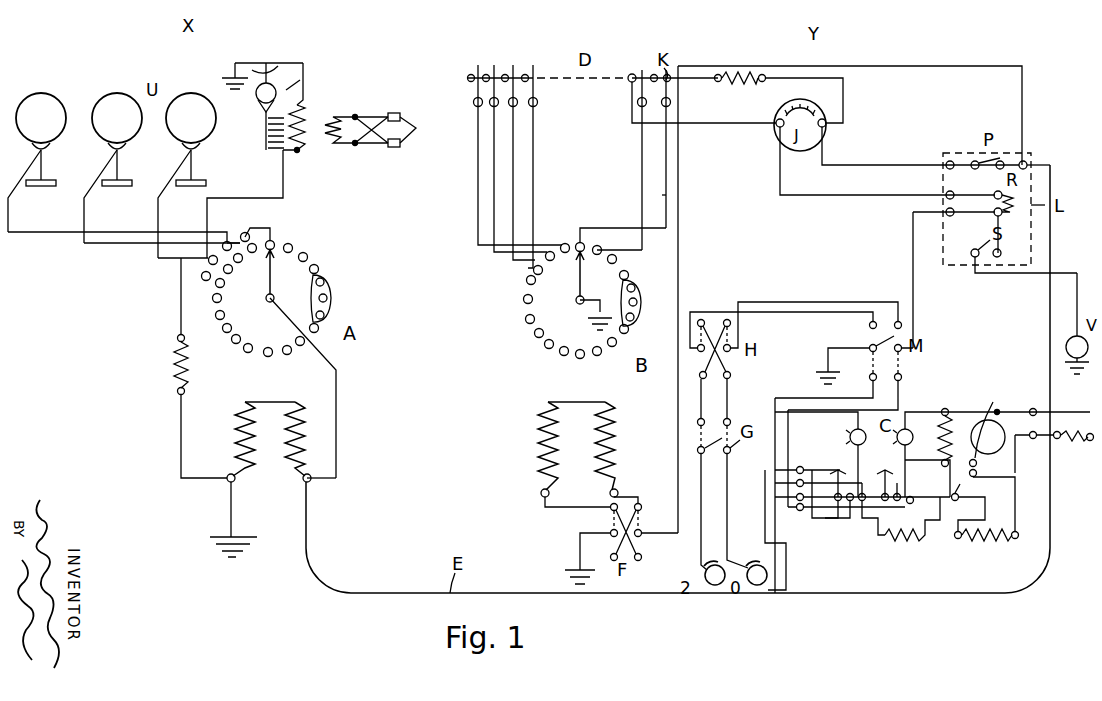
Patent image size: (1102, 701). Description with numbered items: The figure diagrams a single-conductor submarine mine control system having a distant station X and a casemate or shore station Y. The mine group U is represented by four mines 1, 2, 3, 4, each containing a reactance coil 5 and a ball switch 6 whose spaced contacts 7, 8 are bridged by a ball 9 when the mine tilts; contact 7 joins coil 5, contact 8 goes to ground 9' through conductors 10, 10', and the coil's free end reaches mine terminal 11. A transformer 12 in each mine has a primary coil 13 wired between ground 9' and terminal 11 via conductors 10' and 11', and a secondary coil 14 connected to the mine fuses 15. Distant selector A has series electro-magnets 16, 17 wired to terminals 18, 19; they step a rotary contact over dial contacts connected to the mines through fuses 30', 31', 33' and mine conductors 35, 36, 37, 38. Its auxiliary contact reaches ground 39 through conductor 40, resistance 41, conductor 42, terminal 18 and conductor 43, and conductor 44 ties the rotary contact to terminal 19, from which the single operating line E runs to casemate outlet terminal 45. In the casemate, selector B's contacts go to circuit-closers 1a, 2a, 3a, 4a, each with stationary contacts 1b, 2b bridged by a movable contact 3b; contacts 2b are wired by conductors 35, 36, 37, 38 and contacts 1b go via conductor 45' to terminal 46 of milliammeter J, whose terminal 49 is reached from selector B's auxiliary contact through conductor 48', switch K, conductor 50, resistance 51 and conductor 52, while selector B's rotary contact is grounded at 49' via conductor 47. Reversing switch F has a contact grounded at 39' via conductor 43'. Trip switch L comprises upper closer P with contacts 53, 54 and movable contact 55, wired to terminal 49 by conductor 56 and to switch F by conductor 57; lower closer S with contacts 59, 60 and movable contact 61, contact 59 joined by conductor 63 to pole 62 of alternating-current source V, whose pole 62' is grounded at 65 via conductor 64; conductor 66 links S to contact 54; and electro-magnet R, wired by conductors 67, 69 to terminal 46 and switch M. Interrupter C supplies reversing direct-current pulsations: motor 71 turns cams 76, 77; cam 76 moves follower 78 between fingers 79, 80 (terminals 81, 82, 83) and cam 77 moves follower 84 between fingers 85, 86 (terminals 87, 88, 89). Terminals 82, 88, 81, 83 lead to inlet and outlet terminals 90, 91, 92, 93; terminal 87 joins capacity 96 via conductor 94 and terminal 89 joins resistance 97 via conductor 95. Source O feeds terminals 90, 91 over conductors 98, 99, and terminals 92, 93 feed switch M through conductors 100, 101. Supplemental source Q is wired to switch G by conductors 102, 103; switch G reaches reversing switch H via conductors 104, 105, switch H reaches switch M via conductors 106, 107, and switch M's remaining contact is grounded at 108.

The mine 1 is at (37, 162).
The mine 2 is at (113, 168).
The mine 3 is at (187, 175).
The mine 4 is at (256, 131).
The reactance coil 5 is at (266, 144).
The ball switch 6 is at (256, 96).
The contact 7 is at (257, 109).
The contact 8 is at (250, 63).
The ball 9 is at (300, 75).
The ground 9' is at (228, 71).
The conductor 10 is at (311, 73).
The conductor 10' is at (268, 57).
The mine terminal 11 is at (302, 165).
The conductor 11' is at (315, 163).
The transformer 12 is at (332, 116).
The primary coil 13 is at (302, 108).
The secondary coil 14 is at (352, 116).
The mine fuses 15 is at (418, 130).
The electro-magnet 16 is at (234, 435).
The electro-magnet 17 is at (305, 426).
The selector terminal 18 is at (236, 482).
The selector terminal 19 is at (311, 482).
The fuse 30' is at (248, 227).
The switch contact 31' is at (228, 231).
The switch contact 33' is at (215, 278).
The mine conductor 35 is at (20, 210).
The mine conductor 36 is at (94, 210).
The mine conductor 37 is at (166, 210).
The mine conductor 38 is at (232, 198).
The ground 39 is at (222, 550).
The ground 39' is at (567, 578).
The conductor 40 is at (181, 311).
The resistance 41 is at (176, 360).
The conductor 42 is at (180, 439).
The conductor 43 is at (215, 509).
The conductor 43' is at (611, 533).
The conductor 44 is at (336, 418).
The outlet terminal 45 is at (1048, 155).
The conductor 45' is at (716, 115).
The milliammeter terminal 46 is at (776, 123).
The conductor 47 is at (600, 300).
The conductor 48' is at (687, 185).
The milliammeter terminal 49 is at (844, 117).
The ground 49' is at (590, 325).
The conductor 50 is at (706, 76).
The resistance 51 is at (738, 76).
The conductor 52 is at (844, 84).
The contact 53 is at (976, 168).
The contact 54 is at (1024, 161).
The movable contact 55 is at (1002, 156).
The conductor 56 is at (886, 166).
The conductor 57 is at (680, 224).
The stationary contact 59 is at (971, 253).
The stationary contact 60 is at (1001, 253).
The movable contact 61 is at (973, 274).
The pole 62 is at (1072, 334).
The pole 62' is at (1084, 385).
The conductor 63 is at (1030, 275).
The conductor 64 is at (1070, 365).
The ground 65 is at (1074, 378).
The conductor 66 is at (984, 222).
The conductor 67 is at (868, 195).
The conductor 69 is at (913, 304).
The motor 71 is at (990, 419).
The cam 76 is at (858, 430).
The cam 77 is at (942, 414).
The follower 78 is at (816, 428).
The resilient contact finger 79 is at (836, 477).
The resilient contact finger 80 is at (878, 479).
The terminal 81 is at (834, 518).
The terminal 82 is at (854, 518).
The terminal 83 is at (878, 518).
The follower 84 is at (904, 441).
The resilient finger 85 is at (879, 487).
The resilient finger 86 is at (908, 461).
The terminal 87 is at (954, 486).
The terminal 88 is at (954, 498).
The terminal 89 is at (950, 498).
The inlet terminal 90 is at (807, 461).
The inlet terminal 91 is at (818, 467).
The outlet terminal 92 is at (798, 502).
The outlet terminal 93 is at (802, 511).
The conductor 94 is at (874, 537).
The conductor 95 is at (944, 539).
The capacity 96 is at (894, 537).
The resistance 97 is at (916, 537).
The conductor 98 is at (737, 512).
The conductor 99 is at (774, 530).
The conductor 100 is at (775, 416).
The conductor 101 is at (790, 450).
The conductor 102 is at (701, 480).
The conductor 103 is at (727, 454).
The conductor 104 is at (700, 399).
The conductor 105 is at (726, 403).
The conductor 106 is at (822, 302).
The conductor 107 is at (828, 350).
The ground 108 is at (816, 376).
The circuit-closer 1a is at (514, 148).
The circuit-closer 2a is at (516, 151).
The circuit-closer 3a is at (520, 155).
The circuit-closer 4a is at (533, 159).
The stationary contact 1b is at (467, 79).
The stationary contact 2b is at (473, 102).
The movable contact 3b is at (471, 100).